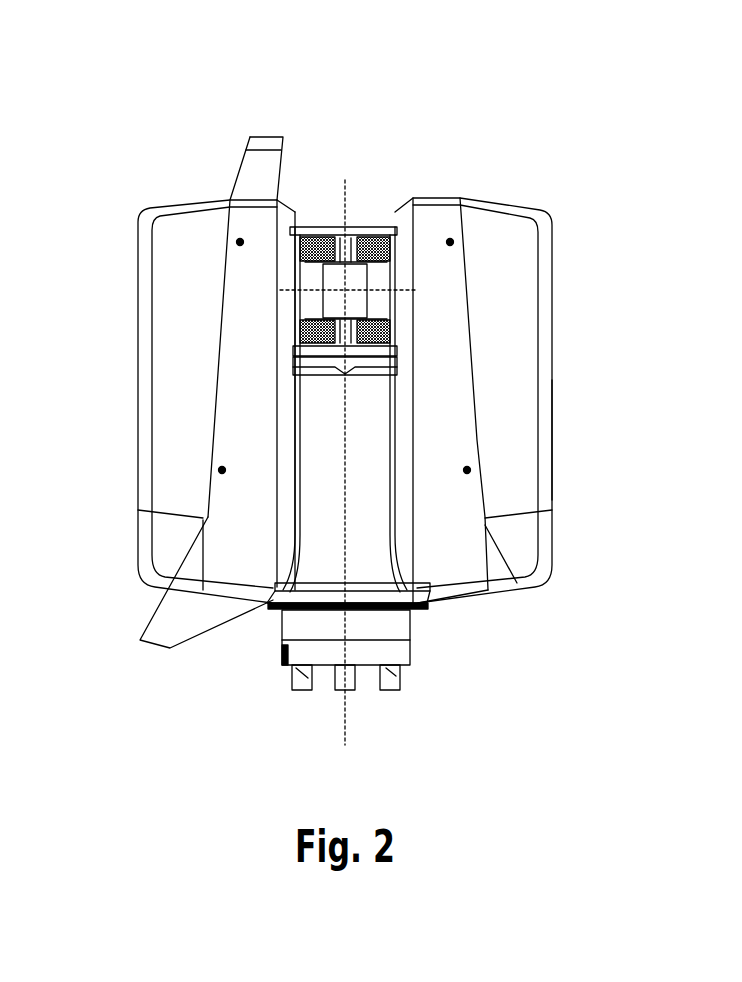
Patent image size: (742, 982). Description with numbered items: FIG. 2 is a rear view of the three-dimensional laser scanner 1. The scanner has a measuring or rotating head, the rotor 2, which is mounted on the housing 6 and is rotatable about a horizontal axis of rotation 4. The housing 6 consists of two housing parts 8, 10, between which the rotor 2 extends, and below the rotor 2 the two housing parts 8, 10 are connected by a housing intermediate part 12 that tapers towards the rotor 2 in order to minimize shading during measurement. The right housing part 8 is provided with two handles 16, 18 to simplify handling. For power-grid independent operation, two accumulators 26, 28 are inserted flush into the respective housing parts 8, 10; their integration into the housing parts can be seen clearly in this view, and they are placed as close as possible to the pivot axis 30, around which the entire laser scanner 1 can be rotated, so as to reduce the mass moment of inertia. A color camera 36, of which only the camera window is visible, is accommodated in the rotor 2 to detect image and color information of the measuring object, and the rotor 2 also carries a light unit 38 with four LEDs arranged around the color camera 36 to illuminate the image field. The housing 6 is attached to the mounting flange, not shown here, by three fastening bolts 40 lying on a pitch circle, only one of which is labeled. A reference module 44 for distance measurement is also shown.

The 3D laser scanner 1 is at (573, 228).
The rotor 2 is at (325, 227).
The axis of rotation 4 is at (312, 288).
The housing 6 is at (553, 288).
The housing part 8 is at (137, 401).
The housing part 10 is at (553, 381).
The housing intermediate part 12 is at (330, 547).
The handle 16 is at (258, 140).
The handle 18 is at (180, 617).
The accumulator 26 is at (167, 555).
The accumulator 28 is at (530, 548).
The pivot axis 30 is at (347, 629).
The color camera 36 is at (347, 243).
The light unit 38 is at (373, 243).
The fastening bolt 40 is at (388, 697).
The reference module 44 is at (335, 367).